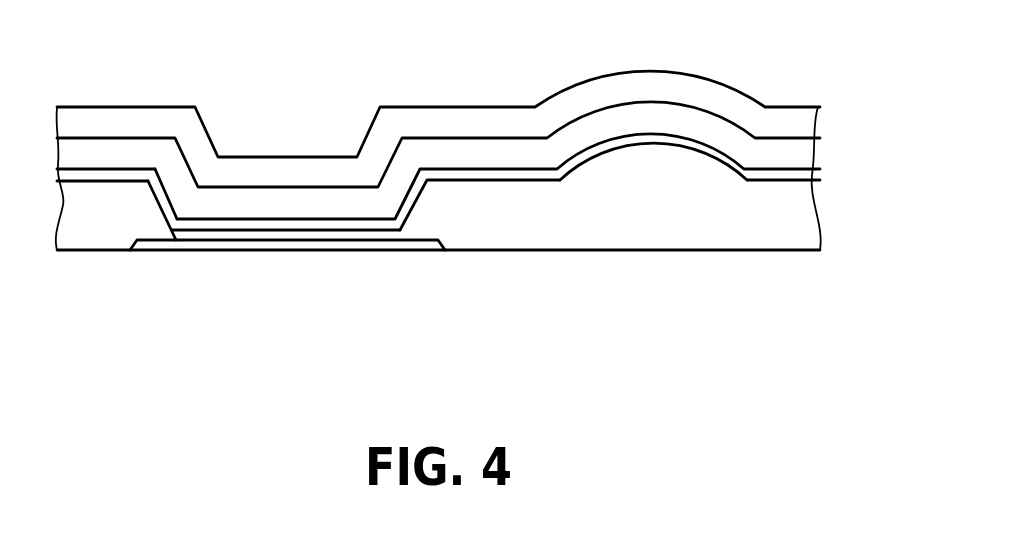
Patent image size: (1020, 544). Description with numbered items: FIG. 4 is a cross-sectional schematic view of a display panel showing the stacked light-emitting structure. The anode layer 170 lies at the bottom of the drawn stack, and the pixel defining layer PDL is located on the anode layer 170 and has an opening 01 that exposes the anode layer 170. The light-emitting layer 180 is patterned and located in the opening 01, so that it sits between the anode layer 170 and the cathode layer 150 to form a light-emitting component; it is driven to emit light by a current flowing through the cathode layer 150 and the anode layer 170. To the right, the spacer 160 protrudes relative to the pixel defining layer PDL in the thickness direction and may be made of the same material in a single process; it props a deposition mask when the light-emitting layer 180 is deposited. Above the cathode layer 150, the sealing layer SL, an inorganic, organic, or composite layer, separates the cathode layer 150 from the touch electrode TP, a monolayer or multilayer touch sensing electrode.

The opening 01 is at (160, 200).
The cathode layer 150 is at (710, 150).
The spacer 160 is at (615, 166).
The anode layer 170 is at (283, 246).
The light-emitting layer 180 is at (332, 234).
The touch electrode TP is at (795, 127).
The sealing layer SL is at (790, 157).
The pixel defining layer PDL is at (793, 213).